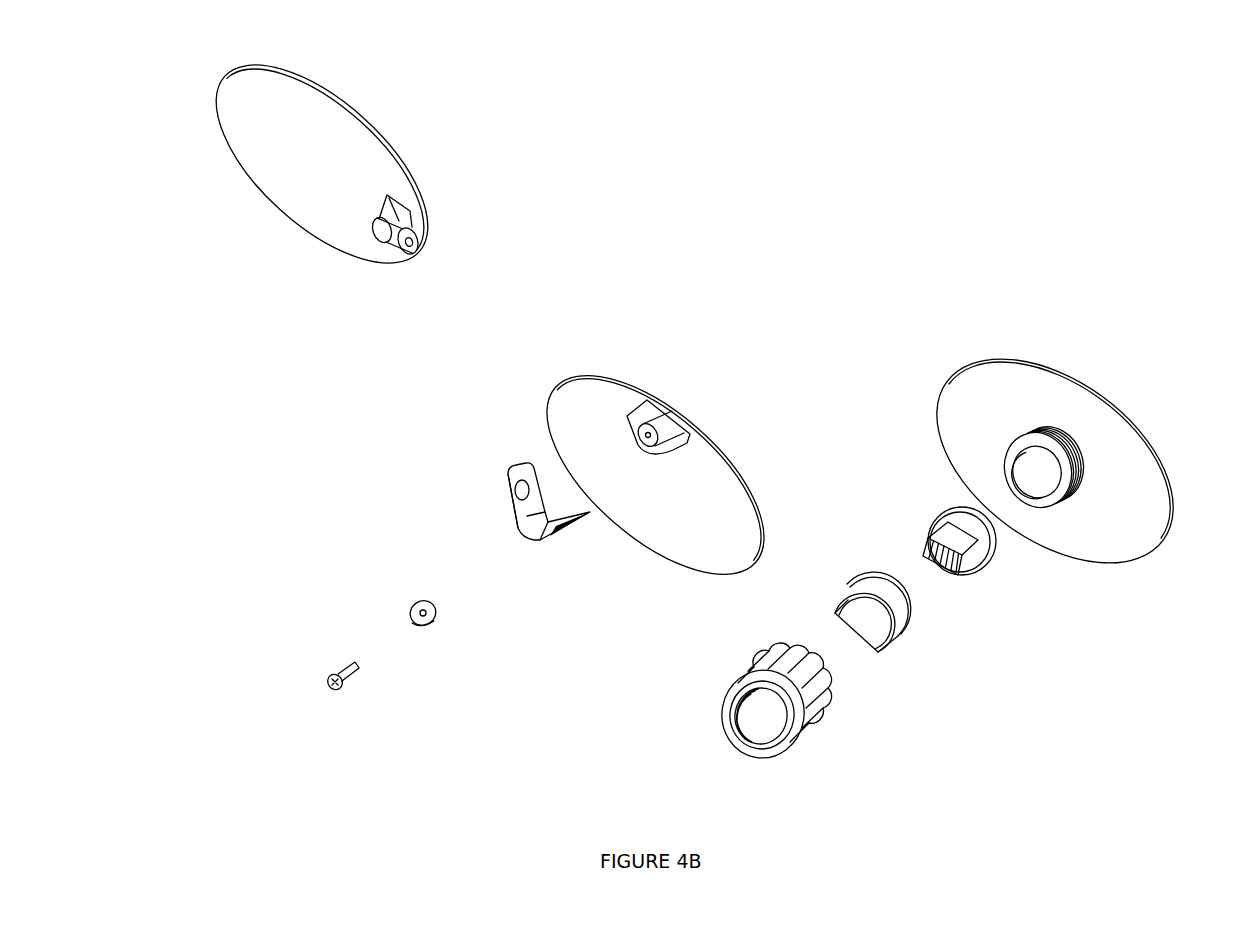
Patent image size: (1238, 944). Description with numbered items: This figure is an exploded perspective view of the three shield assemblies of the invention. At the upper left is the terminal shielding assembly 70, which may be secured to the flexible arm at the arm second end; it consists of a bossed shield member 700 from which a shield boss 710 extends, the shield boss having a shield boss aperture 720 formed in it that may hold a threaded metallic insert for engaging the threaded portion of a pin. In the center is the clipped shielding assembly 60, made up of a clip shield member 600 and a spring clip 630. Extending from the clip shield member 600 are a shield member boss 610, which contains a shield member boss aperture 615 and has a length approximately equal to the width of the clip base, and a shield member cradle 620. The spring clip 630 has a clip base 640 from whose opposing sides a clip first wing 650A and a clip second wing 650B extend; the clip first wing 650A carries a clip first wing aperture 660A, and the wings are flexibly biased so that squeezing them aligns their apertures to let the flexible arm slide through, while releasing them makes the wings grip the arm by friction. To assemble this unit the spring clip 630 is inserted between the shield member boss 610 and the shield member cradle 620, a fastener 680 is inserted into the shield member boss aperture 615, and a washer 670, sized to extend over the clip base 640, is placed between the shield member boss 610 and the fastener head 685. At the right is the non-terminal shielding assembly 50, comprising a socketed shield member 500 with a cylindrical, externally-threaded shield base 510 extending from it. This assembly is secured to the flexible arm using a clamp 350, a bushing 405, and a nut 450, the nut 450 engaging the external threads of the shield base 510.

The terminal shielding assembly 70 is at (384, 84).
The bossed shield member 700 is at (265, 200).
The shield boss 710 is at (404, 215).
The shield boss aperture 720 is at (418, 237).
The clipped shielding assembly 60 is at (802, 297).
The clip shield member 600 is at (733, 455).
The shield member boss 610 is at (661, 400).
The shield member boss aperture 615 is at (686, 416).
The shield member cradle 620 is at (636, 414).
The non-terminal shielding assembly 50 is at (1147, 361).
The socketed shield member 500 is at (1114, 565).
The shield base 510 is at (1072, 506).
The clamp 350 is at (996, 598).
The bushing 405 is at (919, 664).
The nut 450 is at (843, 760).
The spring clip 630 is at (517, 601).
The clip base 640 is at (536, 541).
The clip first wing 650A is at (508, 477).
The clip second wing 650B is at (585, 510).
The clip first wing aperture 660A is at (516, 490).
The washer 670 is at (425, 626).
The fastener 680 is at (314, 699).
The fastener head 685 is at (330, 675).